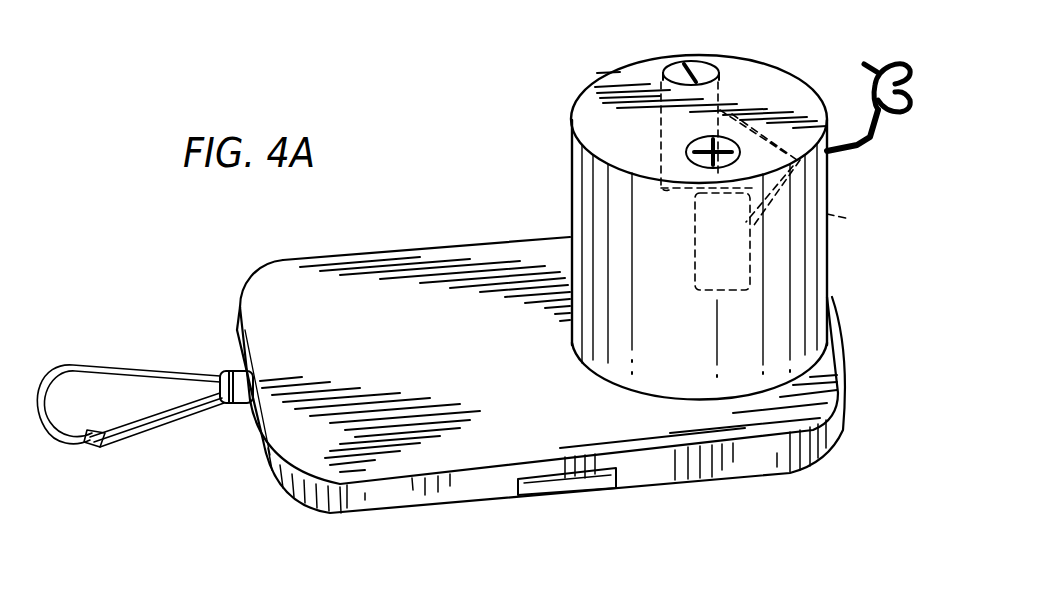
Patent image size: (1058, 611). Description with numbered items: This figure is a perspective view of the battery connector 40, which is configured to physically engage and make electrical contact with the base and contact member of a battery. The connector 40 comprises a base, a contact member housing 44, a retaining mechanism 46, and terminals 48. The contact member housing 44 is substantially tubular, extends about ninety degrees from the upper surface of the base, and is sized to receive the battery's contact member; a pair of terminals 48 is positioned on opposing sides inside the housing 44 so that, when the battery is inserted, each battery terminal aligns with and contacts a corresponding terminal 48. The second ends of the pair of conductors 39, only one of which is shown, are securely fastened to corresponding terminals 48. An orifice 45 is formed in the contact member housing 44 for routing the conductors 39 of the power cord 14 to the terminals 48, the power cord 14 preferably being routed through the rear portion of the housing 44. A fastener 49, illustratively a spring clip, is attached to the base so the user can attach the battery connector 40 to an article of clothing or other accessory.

The battery connector 40 is at (405, 158).
The contact member housing 44 is at (570, 198).
The orifice 45 is at (827, 110).
The power cord 14 is at (877, 60).
The conductors 39 is at (840, 212).
The terminals 48 is at (691, 275).
The retaining mechanism 46 is at (550, 490).
The fastener 49 is at (137, 365).